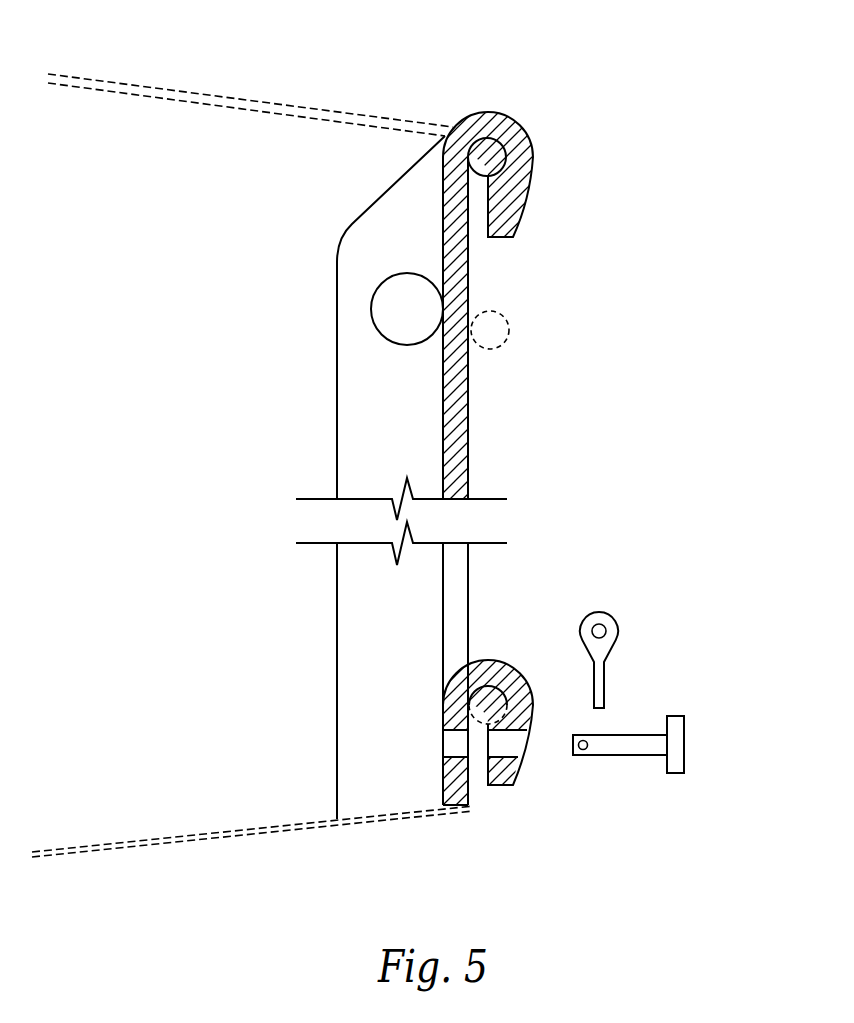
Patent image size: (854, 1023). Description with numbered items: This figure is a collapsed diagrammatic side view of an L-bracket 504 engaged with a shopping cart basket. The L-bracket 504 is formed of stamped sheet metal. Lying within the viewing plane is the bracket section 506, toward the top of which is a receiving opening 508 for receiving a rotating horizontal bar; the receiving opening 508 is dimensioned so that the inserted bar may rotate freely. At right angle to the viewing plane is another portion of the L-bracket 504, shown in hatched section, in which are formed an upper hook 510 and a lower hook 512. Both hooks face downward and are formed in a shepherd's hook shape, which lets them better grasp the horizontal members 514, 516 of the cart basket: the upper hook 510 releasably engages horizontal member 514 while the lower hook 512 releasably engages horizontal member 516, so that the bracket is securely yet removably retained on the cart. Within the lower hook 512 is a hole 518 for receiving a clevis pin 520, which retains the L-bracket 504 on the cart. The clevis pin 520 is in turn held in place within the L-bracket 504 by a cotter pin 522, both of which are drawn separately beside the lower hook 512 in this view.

The L-bracket 504 is at (450, 375).
The bracket section 506 is at (387, 410).
The receiving opening 508 is at (403, 297).
The upper hook 510 is at (512, 118).
The lower hook 512 is at (495, 660).
The horizontal member 514 is at (491, 168).
The horizontal member 516 is at (488, 715).
The hole 518 is at (527, 743).
The clevis pin 520 is at (682, 738).
The cotter pin 522 is at (610, 622).